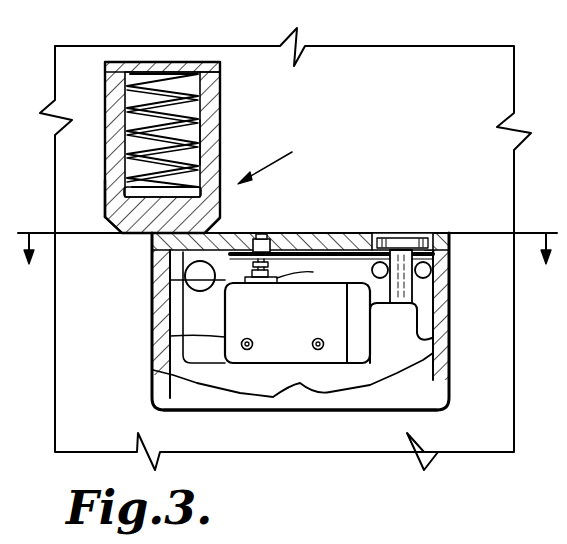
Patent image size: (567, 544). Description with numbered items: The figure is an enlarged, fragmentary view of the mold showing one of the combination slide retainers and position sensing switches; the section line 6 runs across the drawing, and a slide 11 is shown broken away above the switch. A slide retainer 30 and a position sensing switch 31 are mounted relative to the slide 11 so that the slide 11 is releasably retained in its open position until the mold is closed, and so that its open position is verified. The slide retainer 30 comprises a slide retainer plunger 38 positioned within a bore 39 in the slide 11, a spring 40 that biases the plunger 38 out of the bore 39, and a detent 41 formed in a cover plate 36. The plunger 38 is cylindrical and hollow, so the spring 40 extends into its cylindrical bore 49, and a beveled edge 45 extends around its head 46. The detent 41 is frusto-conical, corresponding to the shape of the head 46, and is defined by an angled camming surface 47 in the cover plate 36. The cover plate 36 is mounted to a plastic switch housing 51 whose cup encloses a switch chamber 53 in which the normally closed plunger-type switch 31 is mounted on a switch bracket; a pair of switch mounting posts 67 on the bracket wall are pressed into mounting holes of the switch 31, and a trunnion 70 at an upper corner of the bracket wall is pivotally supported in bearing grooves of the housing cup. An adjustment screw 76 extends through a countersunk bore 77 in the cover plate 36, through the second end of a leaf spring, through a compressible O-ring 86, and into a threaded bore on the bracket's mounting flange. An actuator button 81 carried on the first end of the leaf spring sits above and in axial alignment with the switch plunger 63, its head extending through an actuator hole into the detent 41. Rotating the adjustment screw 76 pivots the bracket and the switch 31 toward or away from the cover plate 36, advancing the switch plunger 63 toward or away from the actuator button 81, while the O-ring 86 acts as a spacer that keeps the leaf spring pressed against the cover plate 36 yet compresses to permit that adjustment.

The slide 11 is at (348, 56).
The section line 6- 6 is at (288, 269).
The slide retainer 30 is at (274, 156).
The position sensing switch 31 is at (152, 325).
The cover plate 36 is at (163, 244).
The slide retainer plunger 38 is at (223, 118).
The bore 39 is at (218, 74).
The spring 40 is at (163, 66).
The detent 41 is at (275, 233).
The beveled edge 45 is at (106, 221).
The head 46 is at (128, 236).
The angled camming surface 47 is at (300, 233).
The cylindrical bore 49 is at (203, 150).
The switch housing 51 is at (449, 400).
The switch chamber 53 is at (298, 385).
The switch plunger 63 is at (280, 278).
The switch mounting posts 67 is at (314, 338).
The trunnion 70 is at (186, 279).
The adjustment screw 76 is at (400, 237).
The countersunk bore 77 is at (441, 320).
The actuator button 81 is at (252, 233).
The O-ring 86 is at (447, 272).